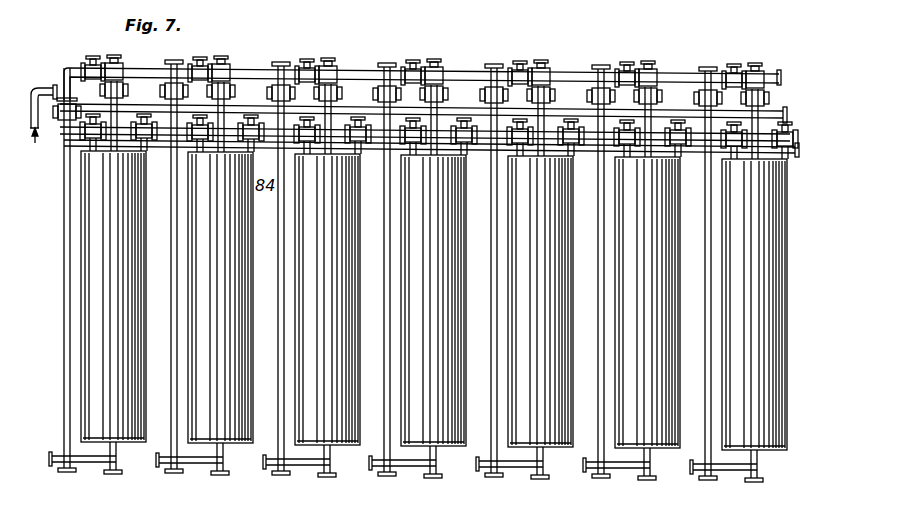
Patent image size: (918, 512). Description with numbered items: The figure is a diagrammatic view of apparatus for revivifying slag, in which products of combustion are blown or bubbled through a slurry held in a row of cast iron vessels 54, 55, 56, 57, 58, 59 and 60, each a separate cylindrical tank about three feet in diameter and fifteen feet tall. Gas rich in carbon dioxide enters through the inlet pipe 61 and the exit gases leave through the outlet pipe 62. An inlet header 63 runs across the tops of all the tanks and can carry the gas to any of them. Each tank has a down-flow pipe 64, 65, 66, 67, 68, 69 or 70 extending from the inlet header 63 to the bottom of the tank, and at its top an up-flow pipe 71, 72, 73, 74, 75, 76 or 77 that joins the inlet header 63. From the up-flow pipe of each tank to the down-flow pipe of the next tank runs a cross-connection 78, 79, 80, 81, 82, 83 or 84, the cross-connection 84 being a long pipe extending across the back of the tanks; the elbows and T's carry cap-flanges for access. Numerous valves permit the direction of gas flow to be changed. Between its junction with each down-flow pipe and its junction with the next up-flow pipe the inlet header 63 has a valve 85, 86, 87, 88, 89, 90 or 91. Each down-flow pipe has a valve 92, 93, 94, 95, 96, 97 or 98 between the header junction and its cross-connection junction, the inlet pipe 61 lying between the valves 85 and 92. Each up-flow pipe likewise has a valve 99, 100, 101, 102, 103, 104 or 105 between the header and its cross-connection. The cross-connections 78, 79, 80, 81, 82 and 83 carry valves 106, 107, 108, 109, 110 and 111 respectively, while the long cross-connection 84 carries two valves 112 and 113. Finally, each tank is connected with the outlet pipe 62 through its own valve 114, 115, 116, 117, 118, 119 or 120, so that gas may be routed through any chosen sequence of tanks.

The vessel 54 is at (113, 296).
The vessel 55 is at (220, 297).
The vessel 56 is at (327, 299).
The vessel 57 is at (433, 300).
The vessel 58 is at (540, 301).
The vessel 59 is at (647, 302).
The vessel 60 is at (754, 304).
The inlet pipe 61 is at (37, 86).
The outlet pipe 62 is at (806, 115).
The inlet header 63 is at (250, 72).
The down-flow pipe 64 is at (64, 231).
The down-flow pipe 65 is at (175, 238).
The down-flow pipe 66 is at (283, 240).
The down-flow pipe 67 is at (390, 242).
The down-flow pipe 68 is at (497, 243).
The down-flow pipe 69 is at (603, 245).
The down-flow pipe 70 is at (711, 246).
The up-flow pipe 71 is at (118, 97).
The up-flow pipe 72 is at (227, 108).
The up-flow pipe 73 is at (334, 108).
The up-flow pipe 74 is at (439, 108).
The up-flow pipe 75 is at (546, 108).
The up-flow pipe 76 is at (653, 108).
The up-flow pipe 77 is at (764, 107).
The cross-connection 78 is at (112, 150).
The cross-connection 79 is at (221, 152).
The cross-connection 80 is at (332, 154).
The cross-connection 81 is at (434, 155).
The cross-connection 82 is at (541, 156).
The cross-connection 83 is at (648, 157).
The cross-connection 84 is at (755, 160).
The valve 85 is at (89, 58).
The valve 86 is at (200, 60).
The valve 87 is at (307, 60).
The valve 88 is at (413, 60).
The valve 89 is at (521, 60).
The valve 90 is at (628, 60).
The valve 91 is at (741, 61).
The valve 92 is at (63, 125).
The valve 93 is at (166, 80).
The valve 94 is at (276, 82).
The valve 95 is at (376, 83).
The valve 96 is at (488, 82).
The valve 97 is at (603, 83).
The valve 98 is at (704, 92).
The valve 99 is at (109, 62).
The valve 100 is at (222, 55).
The valve 101 is at (335, 105).
The valve 102 is at (436, 77).
The valve 103 is at (546, 101).
The valve 104 is at (652, 105).
The valve 105 is at (767, 103).
The valve 106 is at (143, 140).
The valve 107 is at (250, 141).
The valve 108 is at (357, 143).
The valve 109 is at (464, 144).
The valve 110 is at (570, 145).
The valve 111 is at (677, 146).
The valve 112 is at (784, 148).
The valve 113 is at (63, 160).
The valve 114 is at (92, 140).
The valve 115 is at (200, 141).
The valve 116 is at (307, 143).
The valve 117 is at (413, 144).
The valve 118 is at (520, 145).
The valve 119 is at (627, 146).
The valve 120 is at (733, 148).